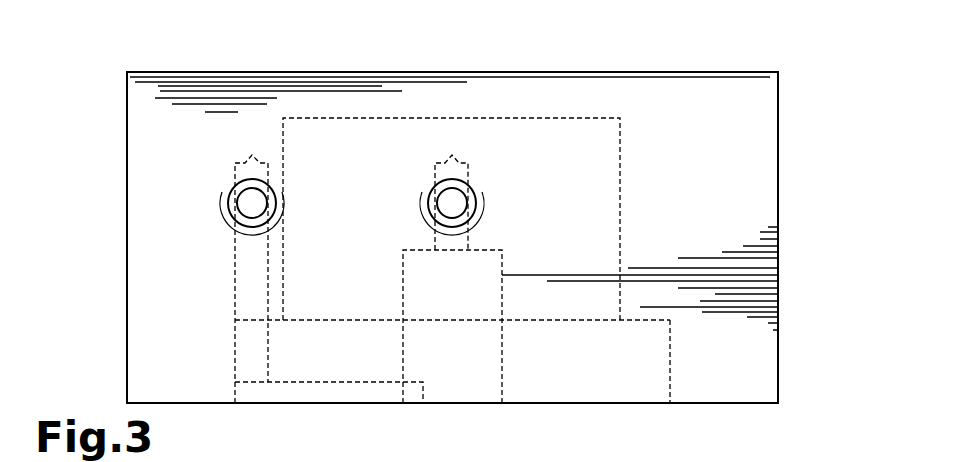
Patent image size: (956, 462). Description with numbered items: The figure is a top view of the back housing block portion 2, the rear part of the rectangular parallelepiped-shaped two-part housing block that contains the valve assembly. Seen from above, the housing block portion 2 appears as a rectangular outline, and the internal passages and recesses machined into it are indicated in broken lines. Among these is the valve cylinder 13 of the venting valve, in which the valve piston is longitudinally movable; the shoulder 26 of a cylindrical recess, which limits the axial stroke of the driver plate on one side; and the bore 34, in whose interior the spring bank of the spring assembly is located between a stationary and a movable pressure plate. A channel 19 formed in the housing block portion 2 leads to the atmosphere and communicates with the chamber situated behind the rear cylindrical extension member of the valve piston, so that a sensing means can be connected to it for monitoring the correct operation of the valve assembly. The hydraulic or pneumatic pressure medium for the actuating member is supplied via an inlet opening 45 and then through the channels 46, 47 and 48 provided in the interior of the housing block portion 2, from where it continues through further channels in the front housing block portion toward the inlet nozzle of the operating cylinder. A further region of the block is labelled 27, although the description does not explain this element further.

The back housing block portion 2 is at (738, 100).
The valve cylinder 13 is at (502, 355).
The channel 19 is at (452, 197).
The shoulder 26 is at (566, 320).
The side wall region 27 is at (670, 372).
The bore 34 is at (620, 178).
The inlet opening 45 is at (230, 214).
The channel 46 is at (253, 197).
The channel 47 is at (250, 296).
The channel 48 is at (337, 390).